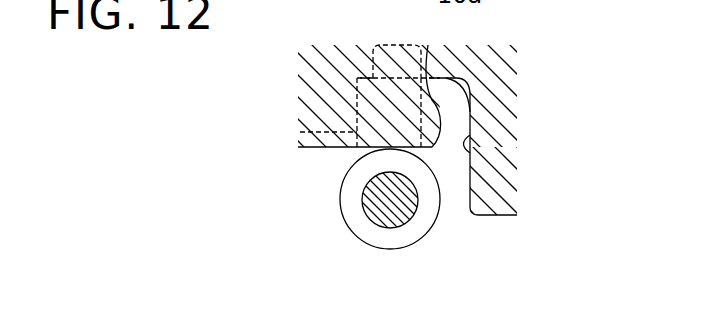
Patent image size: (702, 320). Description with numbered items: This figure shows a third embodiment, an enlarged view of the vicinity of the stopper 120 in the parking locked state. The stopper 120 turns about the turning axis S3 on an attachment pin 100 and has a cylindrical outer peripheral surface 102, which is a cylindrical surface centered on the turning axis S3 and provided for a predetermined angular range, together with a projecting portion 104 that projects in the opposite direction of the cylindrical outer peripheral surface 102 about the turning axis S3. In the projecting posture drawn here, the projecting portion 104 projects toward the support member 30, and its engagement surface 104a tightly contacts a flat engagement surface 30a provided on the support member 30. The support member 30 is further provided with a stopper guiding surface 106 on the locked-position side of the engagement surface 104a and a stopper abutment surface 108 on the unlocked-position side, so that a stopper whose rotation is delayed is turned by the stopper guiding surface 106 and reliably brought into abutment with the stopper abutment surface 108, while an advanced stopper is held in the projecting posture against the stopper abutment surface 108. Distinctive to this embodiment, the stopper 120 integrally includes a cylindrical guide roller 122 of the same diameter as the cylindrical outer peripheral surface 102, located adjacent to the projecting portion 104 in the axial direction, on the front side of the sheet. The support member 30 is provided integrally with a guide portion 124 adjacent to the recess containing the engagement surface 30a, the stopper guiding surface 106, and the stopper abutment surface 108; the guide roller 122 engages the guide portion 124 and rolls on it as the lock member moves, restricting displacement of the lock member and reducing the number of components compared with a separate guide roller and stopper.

The support member 30 is at (406, 60).
The engagement surface 30a is at (473, 104).
The attachment pin 100 is at (378, 199).
The cylindrical outer peripheral surface 102 is at (360, 242).
The projecting portion 104 is at (357, 125).
The engagement surface 104a is at (376, 47).
The stopper guiding surface 106 is at (472, 155).
The stopper abutment surface 108 is at (357, 79).
The stopper 120 is at (416, 249).
The guide roller 122 is at (387, 235).
The guide portion 124 is at (312, 148).
The turning axis S3 is at (392, 202).